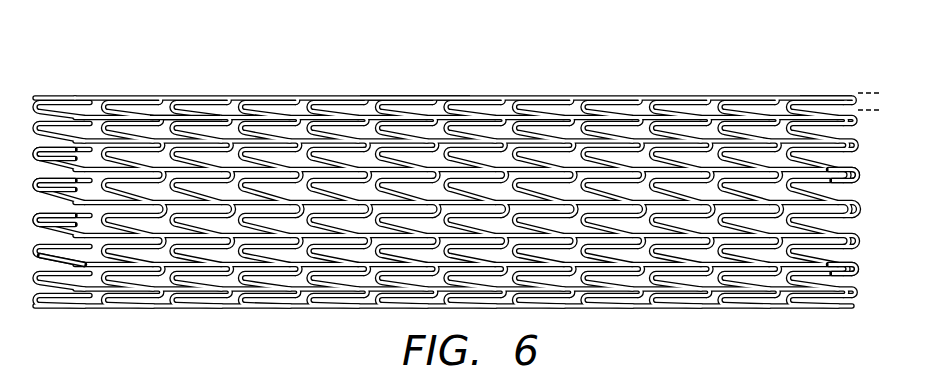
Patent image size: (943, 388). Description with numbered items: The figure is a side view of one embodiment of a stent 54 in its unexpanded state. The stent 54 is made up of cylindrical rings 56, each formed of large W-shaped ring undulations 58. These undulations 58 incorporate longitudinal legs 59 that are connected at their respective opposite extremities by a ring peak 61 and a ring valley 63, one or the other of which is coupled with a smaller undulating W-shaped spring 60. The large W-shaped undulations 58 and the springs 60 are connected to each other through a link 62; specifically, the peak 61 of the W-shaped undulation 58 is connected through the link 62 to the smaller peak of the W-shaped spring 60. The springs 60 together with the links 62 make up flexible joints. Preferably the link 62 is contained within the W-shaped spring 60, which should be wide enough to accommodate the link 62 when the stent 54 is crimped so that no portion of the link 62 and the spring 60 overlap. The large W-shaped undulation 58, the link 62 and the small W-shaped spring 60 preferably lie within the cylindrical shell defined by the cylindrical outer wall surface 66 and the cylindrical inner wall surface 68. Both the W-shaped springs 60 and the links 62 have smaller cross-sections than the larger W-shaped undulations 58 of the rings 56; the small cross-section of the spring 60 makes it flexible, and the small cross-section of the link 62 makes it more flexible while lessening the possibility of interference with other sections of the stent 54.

The stent 54 is at (98, 88).
The cylindrical rings 56 is at (467, 97).
The W-shaped ring undulations 58 is at (33, 224).
The longitudinal legs 59 is at (60, 265).
The W-shaped spring 60 is at (852, 258).
The ring peak 61 is at (852, 168).
The link 62 is at (179, 118).
The ring valley 63 is at (37, 154).
The cylindrical outer wall surface 66 is at (847, 97).
The cylindrical inner wall surface 68 is at (865, 110).